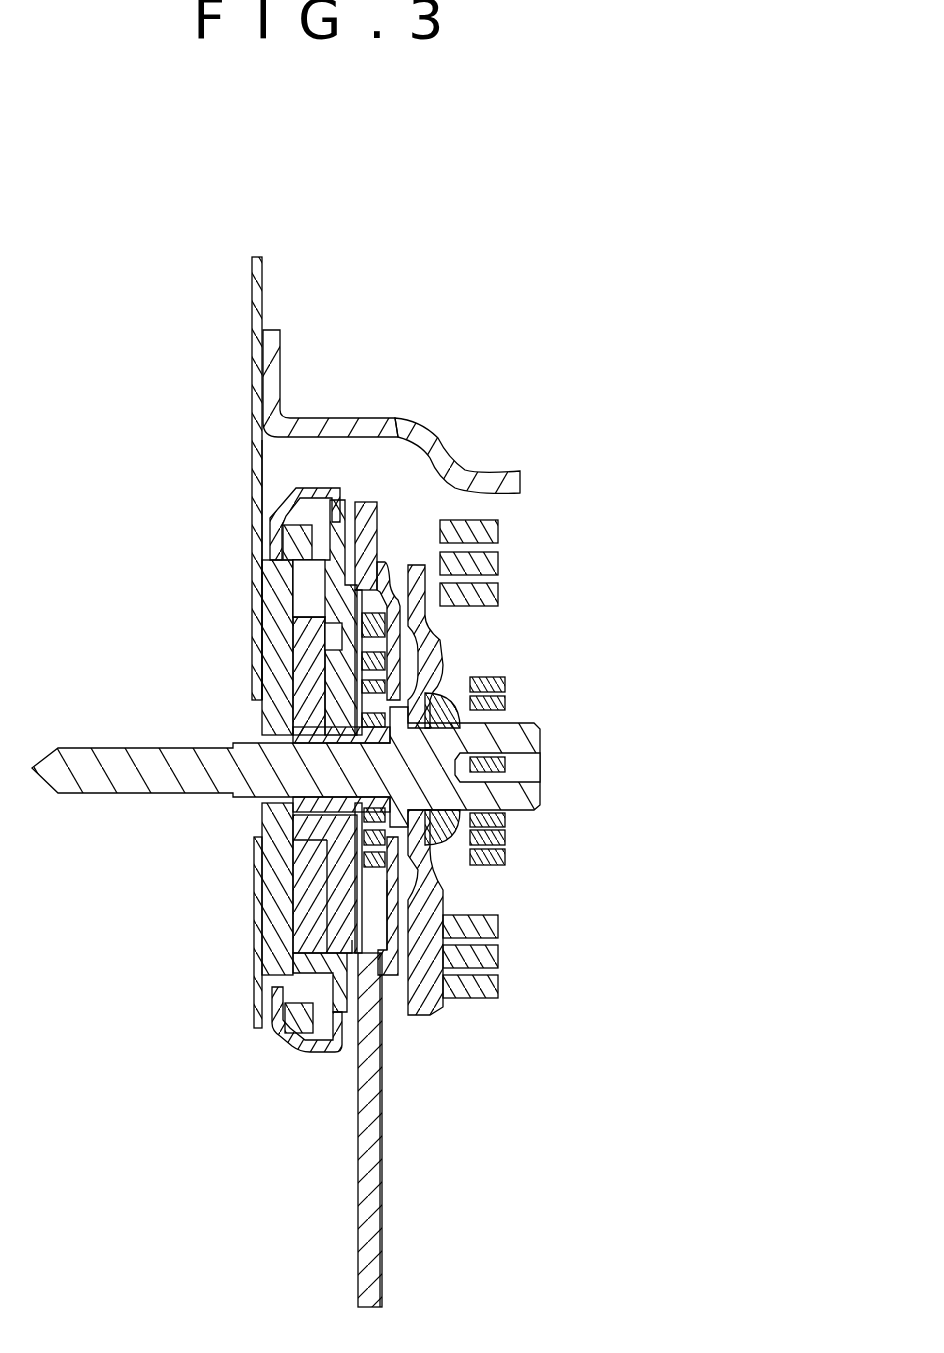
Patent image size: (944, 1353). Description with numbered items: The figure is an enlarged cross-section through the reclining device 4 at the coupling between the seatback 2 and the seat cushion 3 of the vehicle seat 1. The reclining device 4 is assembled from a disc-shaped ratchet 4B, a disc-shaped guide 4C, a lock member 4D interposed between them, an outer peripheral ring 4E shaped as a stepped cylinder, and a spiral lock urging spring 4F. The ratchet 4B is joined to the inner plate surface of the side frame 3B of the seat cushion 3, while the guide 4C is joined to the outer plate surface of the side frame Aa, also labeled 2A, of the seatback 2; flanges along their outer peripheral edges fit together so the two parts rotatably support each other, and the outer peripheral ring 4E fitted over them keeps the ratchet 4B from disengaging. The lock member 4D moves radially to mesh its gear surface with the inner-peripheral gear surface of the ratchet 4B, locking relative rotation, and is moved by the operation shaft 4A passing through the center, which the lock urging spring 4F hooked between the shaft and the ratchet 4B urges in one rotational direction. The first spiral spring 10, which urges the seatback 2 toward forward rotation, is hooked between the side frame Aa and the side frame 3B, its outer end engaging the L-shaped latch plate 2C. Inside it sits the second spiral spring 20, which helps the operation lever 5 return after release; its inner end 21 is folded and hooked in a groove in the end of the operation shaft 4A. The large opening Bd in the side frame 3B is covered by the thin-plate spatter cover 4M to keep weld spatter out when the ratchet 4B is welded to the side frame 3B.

The vehicle seat 1 is at (523, 285).
The seatback 2 is at (302, 628).
The plate surface 2A is at (263, 288).
The side frame Aa is at (256, 487).
The L-shaped latch plate 2C is at (358, 430).
The seat cushion 3 is at (423, 1130).
The side frame 3B is at (370, 1107).
The reclining device 4 is at (330, 492).
The operation shaft 4A is at (528, 740).
The ratchet 4B is at (340, 595).
The guide 4C is at (262, 599).
The lock member 4D is at (318, 663).
The outer peripheral ring 4E is at (311, 487).
The lock urging spring 4F is at (425, 658).
The spatter cover 4M is at (393, 623).
The operation lever 5 is at (480, 915).
The first spiral spring 10 is at (486, 563).
The second spiral spring 20 is at (510, 685).
The inner end 21 is at (492, 762).
The opening Bd is at (372, 910).